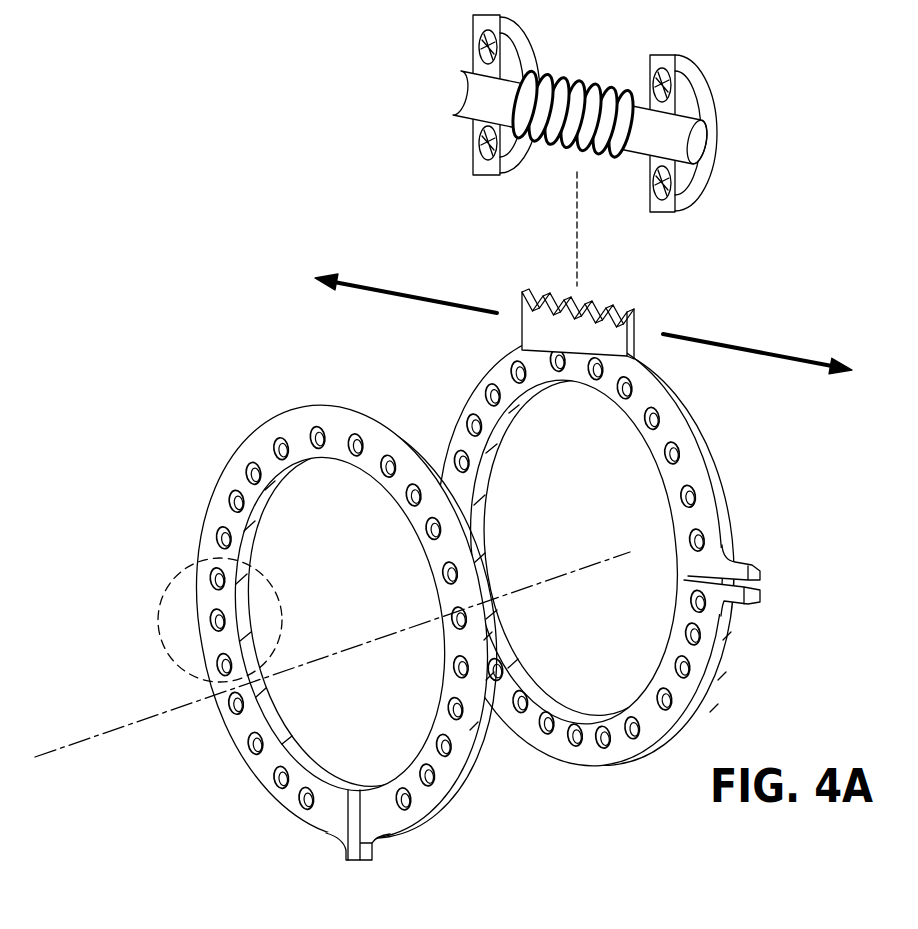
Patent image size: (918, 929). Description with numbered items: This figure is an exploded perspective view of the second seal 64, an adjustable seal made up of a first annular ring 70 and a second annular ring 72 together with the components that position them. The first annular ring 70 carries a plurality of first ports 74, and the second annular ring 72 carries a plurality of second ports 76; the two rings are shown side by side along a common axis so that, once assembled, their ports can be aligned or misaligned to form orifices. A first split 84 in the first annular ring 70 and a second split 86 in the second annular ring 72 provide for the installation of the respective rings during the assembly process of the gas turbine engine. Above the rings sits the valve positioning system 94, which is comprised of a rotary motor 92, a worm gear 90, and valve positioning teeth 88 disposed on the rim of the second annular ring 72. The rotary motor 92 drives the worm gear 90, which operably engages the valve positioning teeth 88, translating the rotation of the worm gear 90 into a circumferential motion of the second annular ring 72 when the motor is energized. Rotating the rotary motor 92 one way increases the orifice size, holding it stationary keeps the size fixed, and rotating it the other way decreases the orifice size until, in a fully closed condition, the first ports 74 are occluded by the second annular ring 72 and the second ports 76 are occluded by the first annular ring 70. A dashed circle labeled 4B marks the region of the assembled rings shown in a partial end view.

The second seal 64 is at (464, 463).
The first annular ring 70 is at (375, 653).
The second annular ring 72 is at (621, 516).
The first ports 74 is at (250, 468).
The second ports 76 is at (467, 417).
The first split 84 is at (355, 863).
The second split 86 is at (752, 583).
The valve positioning teeth 88 is at (620, 310).
The worm gear 90 is at (583, 68).
The rotary motor 92 is at (700, 83).
The valve positioning system 94 is at (516, 112).
The detail view callout 4B is at (160, 585).